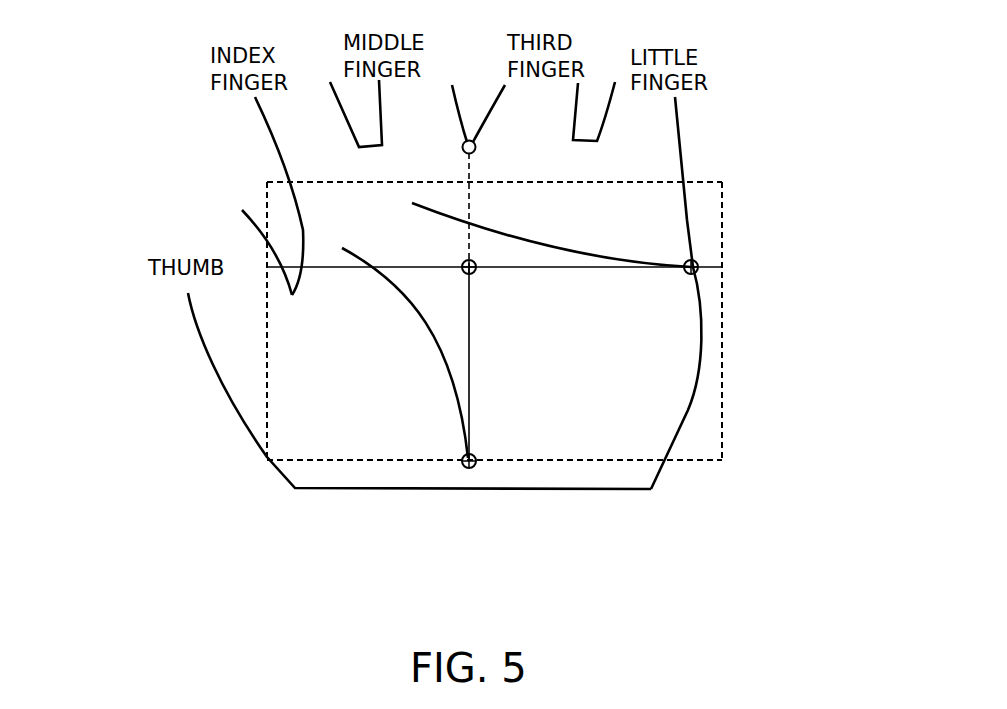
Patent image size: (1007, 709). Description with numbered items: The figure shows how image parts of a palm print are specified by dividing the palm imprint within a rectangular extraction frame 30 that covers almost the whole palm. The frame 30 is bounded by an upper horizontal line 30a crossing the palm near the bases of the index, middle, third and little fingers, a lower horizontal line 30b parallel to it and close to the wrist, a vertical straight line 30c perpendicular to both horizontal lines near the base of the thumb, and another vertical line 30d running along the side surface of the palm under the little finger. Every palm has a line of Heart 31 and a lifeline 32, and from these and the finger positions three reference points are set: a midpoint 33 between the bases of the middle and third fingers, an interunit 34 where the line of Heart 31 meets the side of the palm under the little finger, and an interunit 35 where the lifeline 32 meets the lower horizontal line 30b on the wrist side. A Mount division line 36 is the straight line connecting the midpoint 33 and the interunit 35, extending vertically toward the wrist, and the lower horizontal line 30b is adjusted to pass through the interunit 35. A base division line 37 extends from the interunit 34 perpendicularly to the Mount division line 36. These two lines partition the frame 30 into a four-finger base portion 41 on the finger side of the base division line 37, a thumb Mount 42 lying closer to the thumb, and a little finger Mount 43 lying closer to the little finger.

The rectangular extraction frame 30 is at (543, 331).
The upper horizontal line 30a is at (411, 182).
The lower horizontal line 30b is at (578, 460).
The vertical straight line 30c is at (267, 340).
The vertical line 30d is at (722, 352).
The line of Heart 31 is at (555, 247).
The lifeline 32 is at (456, 409).
The midpoint 33 is at (476, 146).
The interunit 34 is at (700, 266).
The interunit 35 is at (474, 453).
The Mount division line 36 is at (471, 345).
The base division line 37 is at (330, 268).
The four-finger base portion 41 is at (345, 200).
The thumb Mount 42 is at (289, 452).
The little finger Mount 43 is at (679, 396).